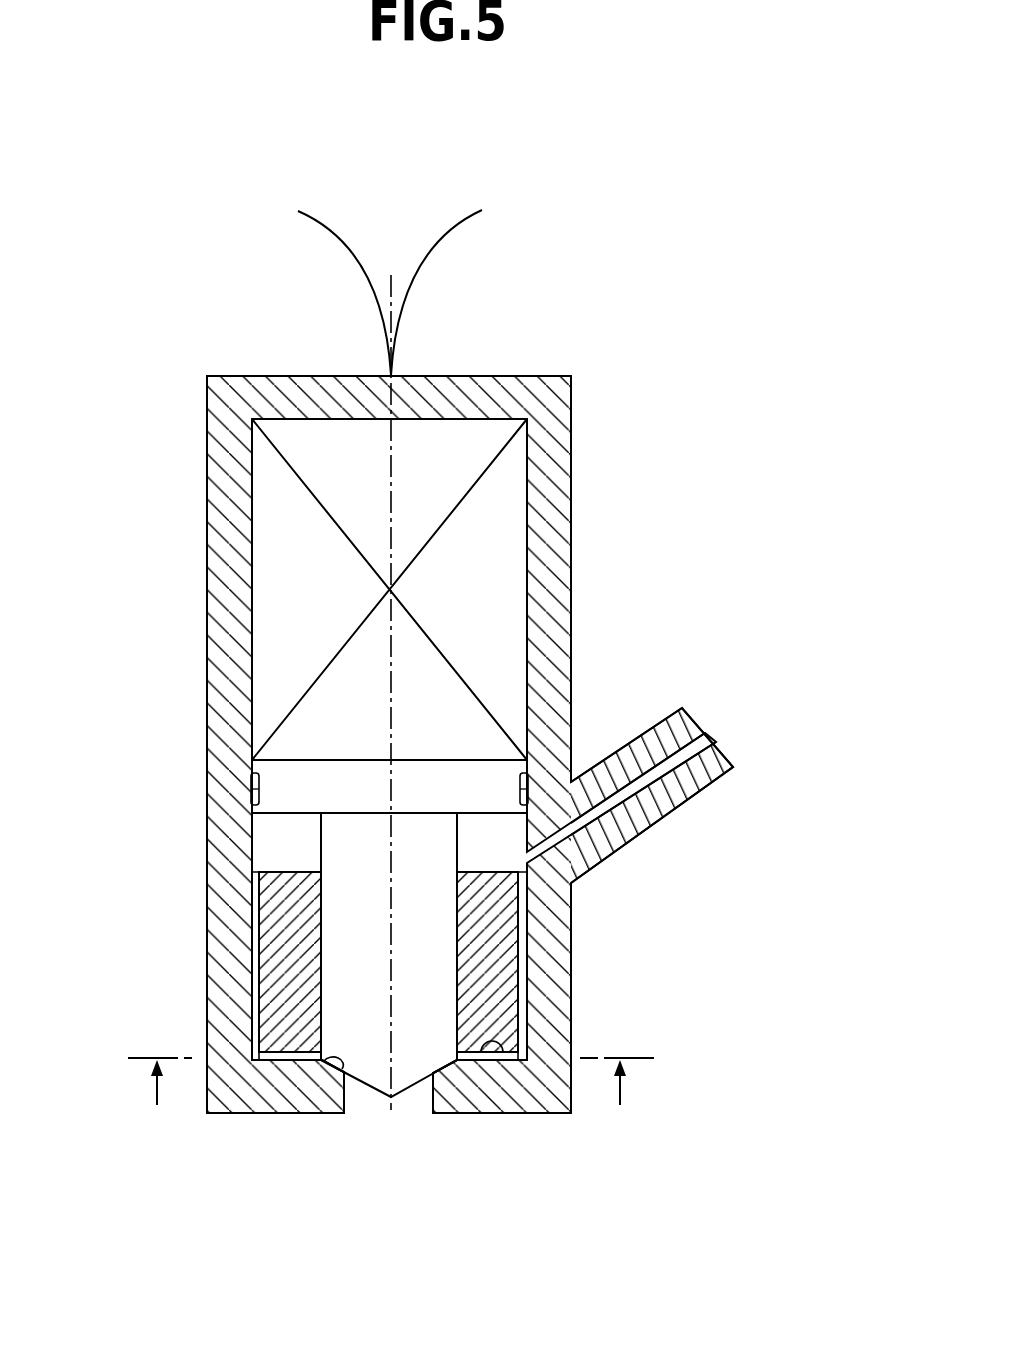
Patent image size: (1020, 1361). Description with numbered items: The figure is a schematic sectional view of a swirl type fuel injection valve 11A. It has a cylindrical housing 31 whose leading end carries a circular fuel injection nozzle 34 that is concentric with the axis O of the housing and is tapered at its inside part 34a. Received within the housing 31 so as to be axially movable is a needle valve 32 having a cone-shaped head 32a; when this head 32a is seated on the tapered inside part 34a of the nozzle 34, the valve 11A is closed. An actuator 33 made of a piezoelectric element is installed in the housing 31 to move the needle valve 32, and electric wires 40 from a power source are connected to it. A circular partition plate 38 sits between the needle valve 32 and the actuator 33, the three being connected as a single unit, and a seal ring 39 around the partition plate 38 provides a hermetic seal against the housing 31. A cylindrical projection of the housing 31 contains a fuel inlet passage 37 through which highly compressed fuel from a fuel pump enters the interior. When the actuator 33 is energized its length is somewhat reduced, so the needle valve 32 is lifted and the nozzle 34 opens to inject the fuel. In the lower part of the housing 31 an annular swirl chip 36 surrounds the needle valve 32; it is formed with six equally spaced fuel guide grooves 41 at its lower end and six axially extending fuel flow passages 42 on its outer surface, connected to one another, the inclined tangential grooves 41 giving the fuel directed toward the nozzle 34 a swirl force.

The swirl type fuel injection valve 11A is at (690, 247).
The cylindrical housing 31 is at (237, 944).
The needle valve 32 is at (494, 1010).
The cone-shaped head 32a is at (373, 1087).
The actuator 33 is at (457, 595).
The fuel injection nozzle 34 is at (433, 1075).
The tapered inside part 34a is at (327, 1062).
The annular swirl chip 36 is at (497, 985).
The fuel inlet passage 37 is at (708, 735).
The circular partition plate 38 is at (320, 770).
The seal ring 39 is at (252, 785).
The electric wires 40 is at (367, 275).
The fuel guide grooves 41 is at (502, 1050).
The fuel flow passages 42 is at (521, 947).
The axis O is at (391, 478).